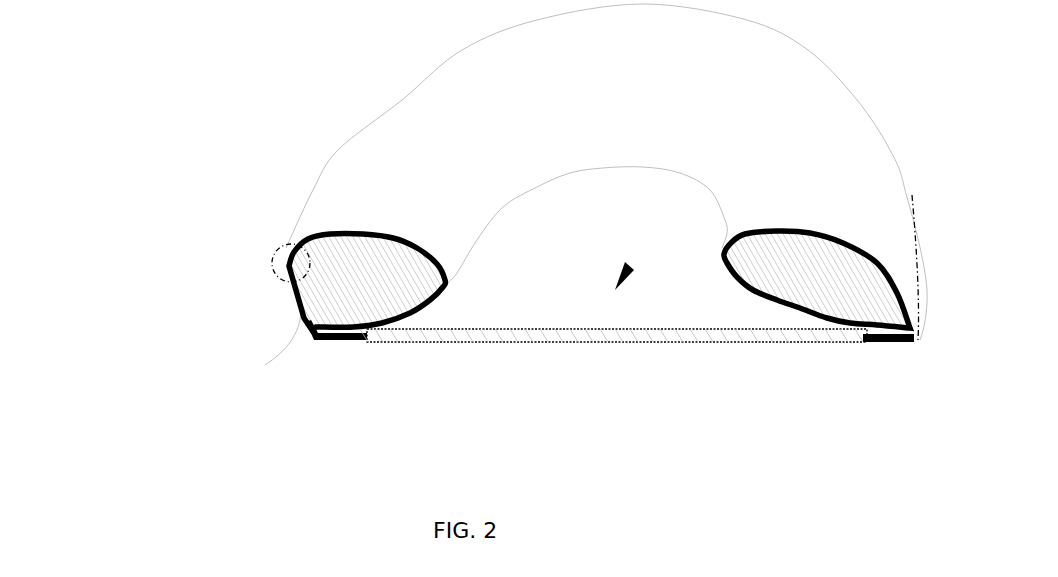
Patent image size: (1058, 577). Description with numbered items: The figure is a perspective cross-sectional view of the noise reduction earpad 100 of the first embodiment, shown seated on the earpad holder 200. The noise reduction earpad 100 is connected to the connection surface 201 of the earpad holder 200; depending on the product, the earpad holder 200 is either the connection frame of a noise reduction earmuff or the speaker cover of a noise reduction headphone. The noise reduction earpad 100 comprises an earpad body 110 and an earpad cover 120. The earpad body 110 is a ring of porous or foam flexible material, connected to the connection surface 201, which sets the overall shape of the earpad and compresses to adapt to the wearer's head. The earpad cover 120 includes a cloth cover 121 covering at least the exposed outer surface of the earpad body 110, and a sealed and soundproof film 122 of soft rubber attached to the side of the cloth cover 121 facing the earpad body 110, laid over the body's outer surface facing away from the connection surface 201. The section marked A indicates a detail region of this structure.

The noise reduction earpad 100 is at (90, 327).
The earpad body 110 is at (353, 315).
The earpad cover 120 is at (172, 283).
The cloth cover 121 is at (297, 303).
The sealed and soundproof film 122 is at (300, 340).
The earpad holder 200 is at (527, 330).
The connection surface 201 is at (629, 266).
The detail region A is at (270, 257).